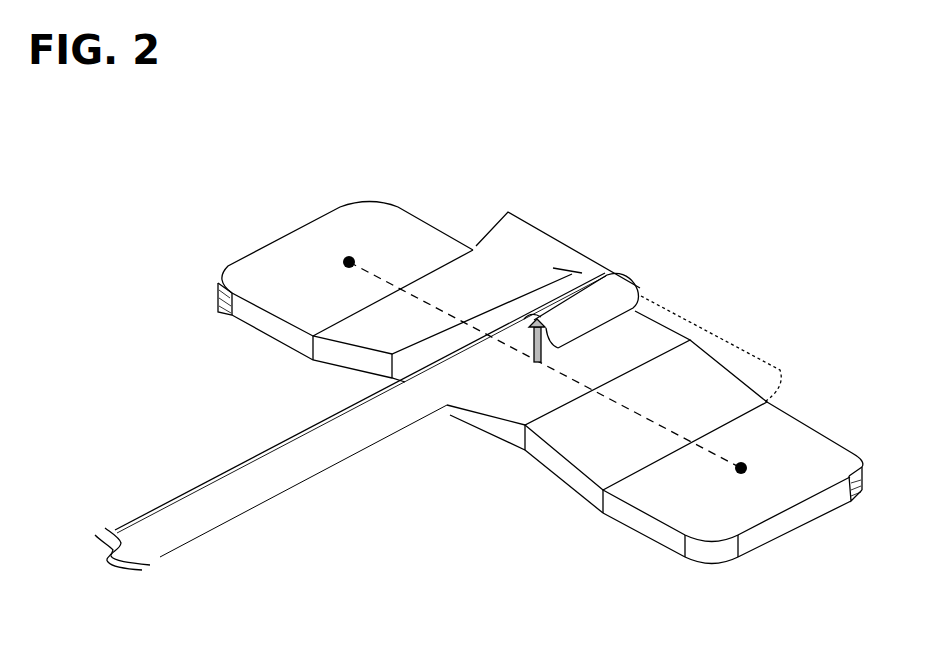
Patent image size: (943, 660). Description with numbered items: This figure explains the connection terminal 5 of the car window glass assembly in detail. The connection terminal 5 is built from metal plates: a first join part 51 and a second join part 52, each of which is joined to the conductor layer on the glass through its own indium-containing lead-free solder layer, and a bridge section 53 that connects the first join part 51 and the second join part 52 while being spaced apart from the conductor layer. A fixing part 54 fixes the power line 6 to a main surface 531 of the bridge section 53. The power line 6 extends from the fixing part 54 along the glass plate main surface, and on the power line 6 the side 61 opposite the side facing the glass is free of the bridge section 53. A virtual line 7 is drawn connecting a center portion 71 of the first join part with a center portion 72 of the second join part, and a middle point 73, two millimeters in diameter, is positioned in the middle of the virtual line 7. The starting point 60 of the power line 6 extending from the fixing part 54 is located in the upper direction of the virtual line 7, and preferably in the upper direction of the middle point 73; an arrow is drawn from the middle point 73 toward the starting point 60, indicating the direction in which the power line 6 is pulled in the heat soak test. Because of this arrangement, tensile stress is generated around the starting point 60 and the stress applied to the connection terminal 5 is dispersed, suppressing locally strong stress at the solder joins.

The connection terminal 5 is at (519, 182).
The first join part 51 is at (827, 478).
The second join part 52 is at (382, 234).
The bridge section 53 is at (658, 266).
The main surface of the bridge section 531 is at (650, 338).
The fixing part 54 is at (593, 326).
The power line 6 is at (302, 472).
The starting point 60 is at (533, 321).
The side 61 is at (478, 350).
The virtual line 7 is at (608, 406).
The center portion of the first join part 71 is at (752, 487).
The center portion of the second join part 72 is at (337, 257).
The middle point 73 is at (538, 370).